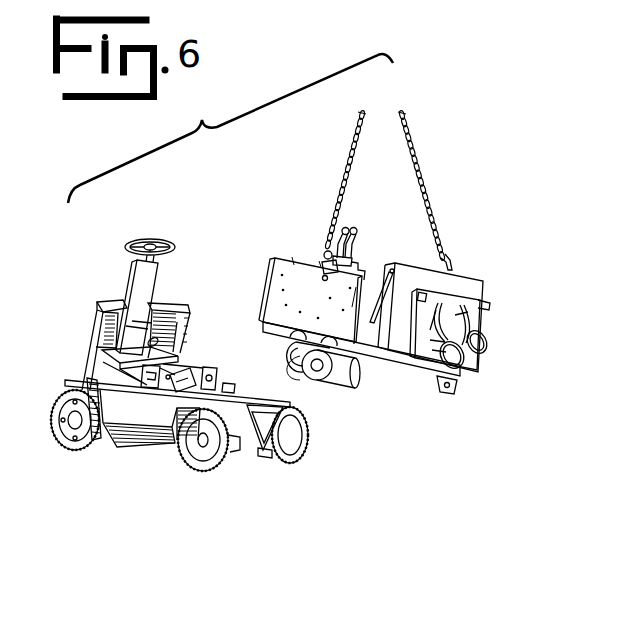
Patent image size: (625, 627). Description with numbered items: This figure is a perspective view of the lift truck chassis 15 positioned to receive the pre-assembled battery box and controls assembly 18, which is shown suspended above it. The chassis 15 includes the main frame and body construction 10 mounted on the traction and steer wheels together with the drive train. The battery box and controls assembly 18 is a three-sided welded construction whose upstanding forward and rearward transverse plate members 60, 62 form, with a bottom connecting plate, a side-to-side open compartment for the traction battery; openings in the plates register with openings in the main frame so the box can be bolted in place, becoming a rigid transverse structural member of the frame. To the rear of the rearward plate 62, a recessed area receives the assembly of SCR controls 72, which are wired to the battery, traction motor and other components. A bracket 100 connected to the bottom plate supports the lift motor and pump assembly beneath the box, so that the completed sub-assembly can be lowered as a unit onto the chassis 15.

The main frame and body construction 10 is at (179, 355).
The chassis 15 is at (134, 447).
The battery box and controls assembly 18 is at (383, 375).
The forward transverse plate member 60 is at (312, 296).
The rearward transverse plate member 62 is at (457, 283).
The SCR controls 72 is at (463, 320).
The bracket 100 is at (350, 363).